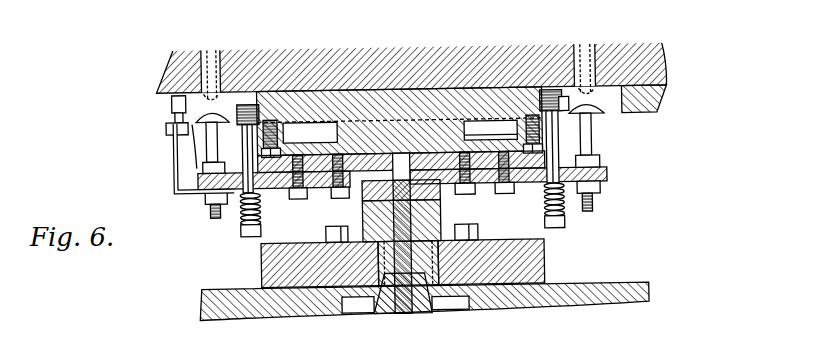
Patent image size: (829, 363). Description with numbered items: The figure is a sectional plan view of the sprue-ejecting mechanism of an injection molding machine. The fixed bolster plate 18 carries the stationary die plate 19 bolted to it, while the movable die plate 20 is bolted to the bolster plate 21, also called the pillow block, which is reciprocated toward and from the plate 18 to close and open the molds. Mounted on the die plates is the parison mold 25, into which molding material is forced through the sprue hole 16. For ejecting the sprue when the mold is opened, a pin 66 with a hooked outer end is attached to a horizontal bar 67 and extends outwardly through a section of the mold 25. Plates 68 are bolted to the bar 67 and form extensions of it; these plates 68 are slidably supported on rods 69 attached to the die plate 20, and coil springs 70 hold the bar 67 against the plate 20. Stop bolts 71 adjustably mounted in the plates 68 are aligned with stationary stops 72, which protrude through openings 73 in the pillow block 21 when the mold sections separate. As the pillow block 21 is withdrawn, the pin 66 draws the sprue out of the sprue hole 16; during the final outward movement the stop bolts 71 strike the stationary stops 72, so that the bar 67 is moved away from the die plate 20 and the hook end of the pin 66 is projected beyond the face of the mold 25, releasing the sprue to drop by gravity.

The sprue hole 16 is at (392, 222).
The bolster plate 18 is at (617, 285).
The stationary die plate 19 is at (538, 261).
The movable die plate 20 is at (470, 91).
The bolster plate 21 is at (663, 66).
The parison mold 25 is at (437, 172).
The pin 66 is at (363, 194).
The horizontal bar 67 is at (440, 182).
The plates 68 is at (286, 187).
The rods 69 is at (250, 142).
The coil springs 70 is at (242, 215).
The stop bolts 71 is at (213, 140).
The stationary stops 72 is at (206, 99).
The openings 73 is at (203, 60).